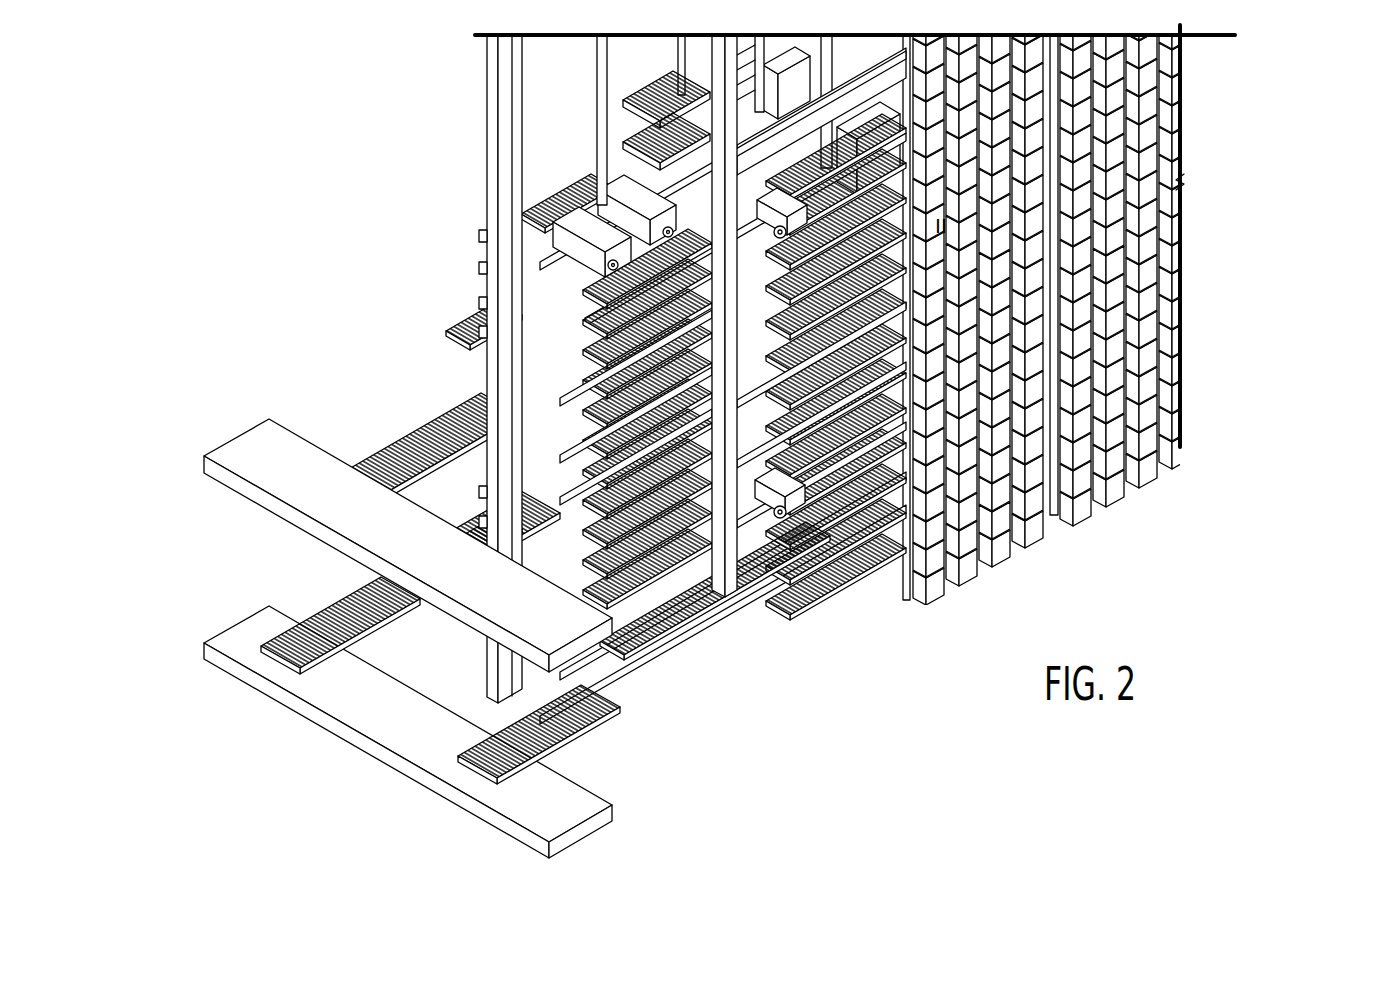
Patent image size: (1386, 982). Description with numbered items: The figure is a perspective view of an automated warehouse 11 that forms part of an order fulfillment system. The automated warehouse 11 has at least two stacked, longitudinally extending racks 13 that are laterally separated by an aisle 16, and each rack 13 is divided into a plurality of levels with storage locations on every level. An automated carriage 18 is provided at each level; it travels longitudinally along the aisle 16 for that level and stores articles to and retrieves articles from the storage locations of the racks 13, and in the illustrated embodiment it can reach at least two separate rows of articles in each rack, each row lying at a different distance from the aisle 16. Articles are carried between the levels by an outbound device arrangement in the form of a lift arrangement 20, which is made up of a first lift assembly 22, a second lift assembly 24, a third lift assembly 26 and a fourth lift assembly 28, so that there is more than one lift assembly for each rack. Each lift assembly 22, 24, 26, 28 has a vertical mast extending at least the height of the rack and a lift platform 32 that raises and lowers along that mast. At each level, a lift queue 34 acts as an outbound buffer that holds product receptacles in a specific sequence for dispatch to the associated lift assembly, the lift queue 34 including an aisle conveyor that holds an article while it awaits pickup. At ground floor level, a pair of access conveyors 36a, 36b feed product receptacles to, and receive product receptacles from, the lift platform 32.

The automated warehouse 11 is at (1318, 116).
The rack 13 is at (1181, 337).
The aisle 16 is at (867, 105).
The automated carriage 18 is at (645, 218).
The lift arrangement 20 is at (487, 318).
The first lift assembly 22 is at (490, 72).
The second lift assembly 24 is at (525, 68).
The third lift assembly 26 is at (597, 90).
The fourth lift assembly 28 is at (732, 553).
The lift platform 32 is at (505, 347).
The lift queue 34 is at (540, 190).
The access conveyor 36a is at (292, 652).
The access conveyor 36b is at (545, 745).